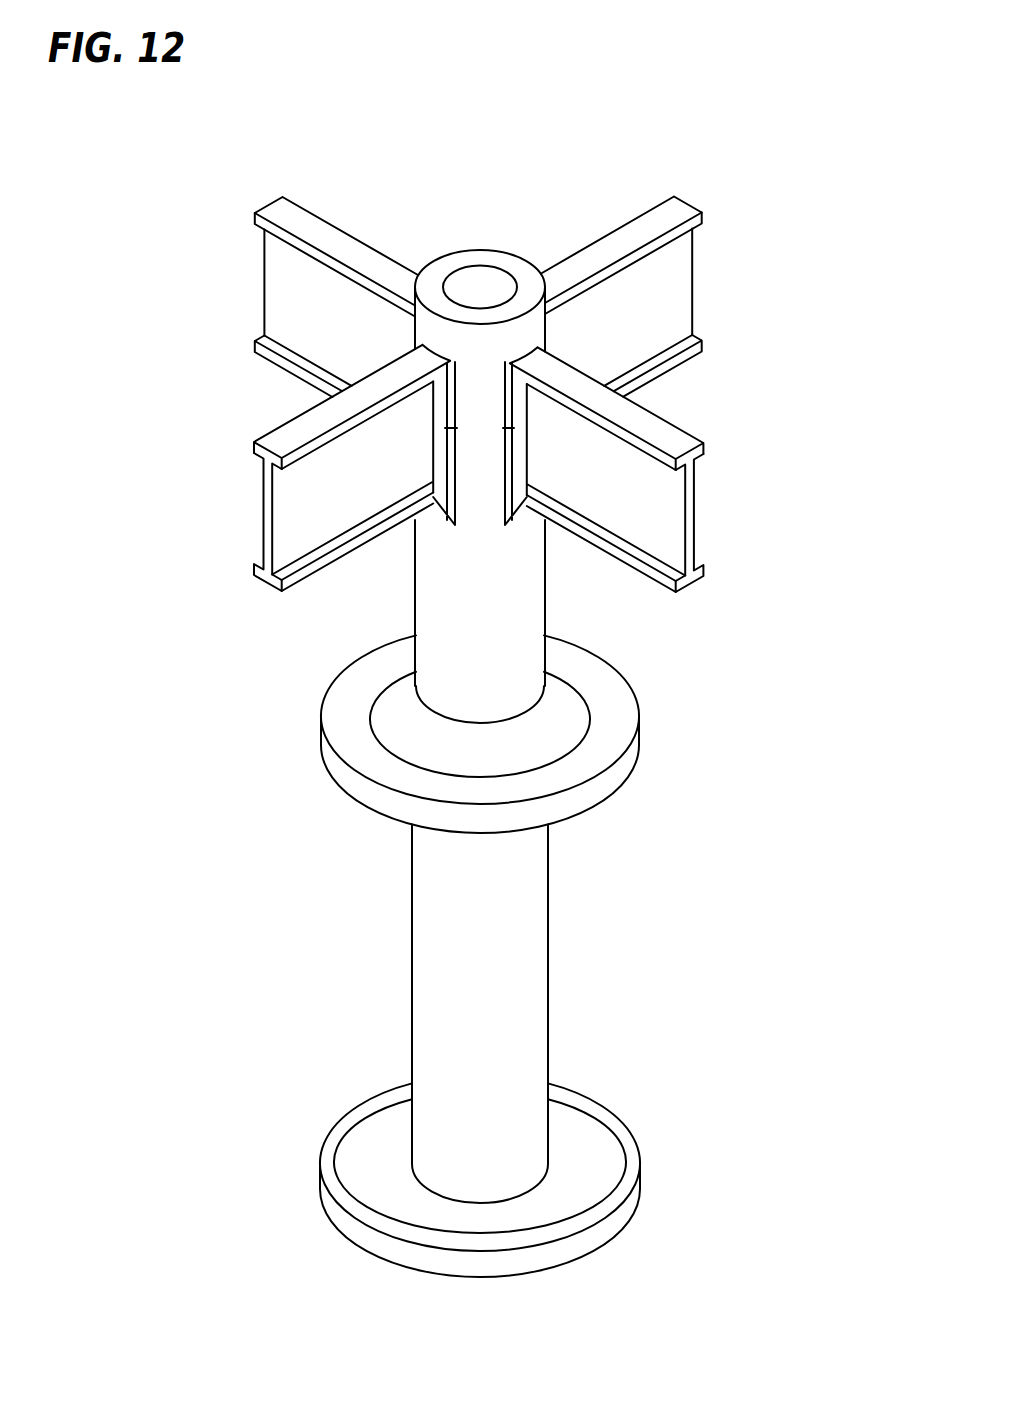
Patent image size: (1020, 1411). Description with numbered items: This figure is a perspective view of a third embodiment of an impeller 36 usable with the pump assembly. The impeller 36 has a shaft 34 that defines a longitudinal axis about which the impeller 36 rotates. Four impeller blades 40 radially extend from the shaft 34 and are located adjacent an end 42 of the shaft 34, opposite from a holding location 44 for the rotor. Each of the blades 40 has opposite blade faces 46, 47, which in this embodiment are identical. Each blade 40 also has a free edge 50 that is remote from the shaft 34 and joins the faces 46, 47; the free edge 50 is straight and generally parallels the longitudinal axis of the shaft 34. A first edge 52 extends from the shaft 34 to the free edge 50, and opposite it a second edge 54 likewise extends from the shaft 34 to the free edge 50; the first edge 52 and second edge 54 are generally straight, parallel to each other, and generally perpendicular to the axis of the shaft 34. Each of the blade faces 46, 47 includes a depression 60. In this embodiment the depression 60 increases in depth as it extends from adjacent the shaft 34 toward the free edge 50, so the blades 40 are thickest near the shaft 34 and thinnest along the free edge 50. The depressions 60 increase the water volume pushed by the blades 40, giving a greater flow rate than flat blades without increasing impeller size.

The shaft 34 is at (410, 625).
The impeller 36 is at (728, 92).
The impeller blades 40 is at (474, 373).
The end 42 is at (480, 266).
The holding location 44 is at (555, 985).
The blade face 46 is at (277, 267).
The blade face 47 is at (618, 527).
The free edge 50 is at (277, 268).
The first edge 52 is at (355, 250).
The second edge 54 is at (293, 377).
The depression 60 is at (285, 303).